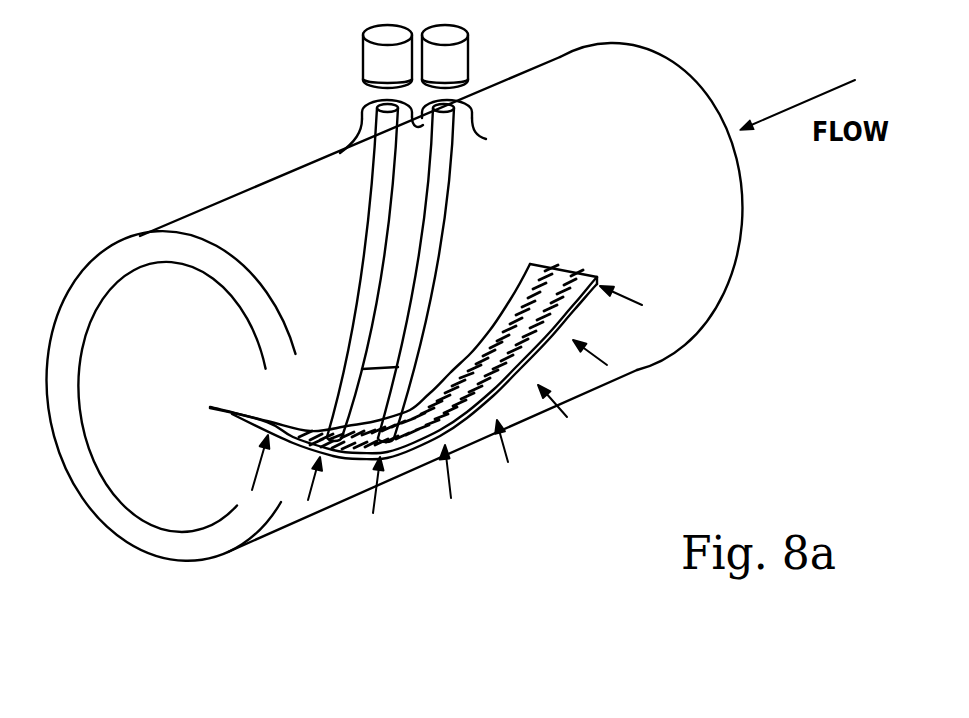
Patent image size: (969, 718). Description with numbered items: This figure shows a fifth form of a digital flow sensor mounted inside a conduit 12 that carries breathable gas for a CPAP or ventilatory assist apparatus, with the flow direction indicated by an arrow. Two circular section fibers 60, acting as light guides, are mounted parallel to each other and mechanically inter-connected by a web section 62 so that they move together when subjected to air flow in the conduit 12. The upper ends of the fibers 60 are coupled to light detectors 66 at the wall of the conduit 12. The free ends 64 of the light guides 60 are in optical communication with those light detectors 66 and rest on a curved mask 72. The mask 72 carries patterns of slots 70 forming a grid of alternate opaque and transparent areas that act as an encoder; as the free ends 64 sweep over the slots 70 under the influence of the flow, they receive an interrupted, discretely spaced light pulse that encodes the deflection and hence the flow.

The conduit 12 is at (232, 214).
The circular section fibers 60 is at (374, 228).
The web section 62 is at (372, 394).
The free ends 64 is at (330, 428).
The light detectors 66 is at (376, 51).
The slots 70 is at (533, 288).
The mask 72 is at (562, 275).